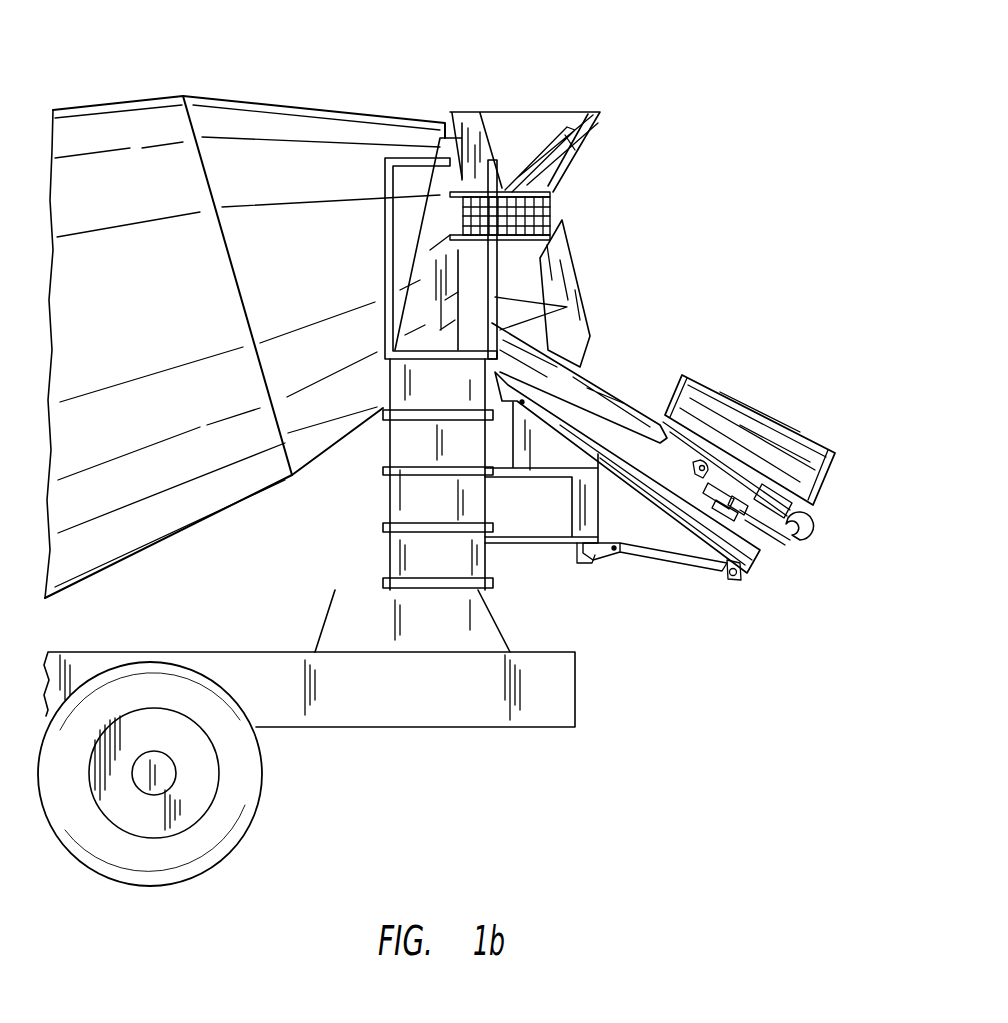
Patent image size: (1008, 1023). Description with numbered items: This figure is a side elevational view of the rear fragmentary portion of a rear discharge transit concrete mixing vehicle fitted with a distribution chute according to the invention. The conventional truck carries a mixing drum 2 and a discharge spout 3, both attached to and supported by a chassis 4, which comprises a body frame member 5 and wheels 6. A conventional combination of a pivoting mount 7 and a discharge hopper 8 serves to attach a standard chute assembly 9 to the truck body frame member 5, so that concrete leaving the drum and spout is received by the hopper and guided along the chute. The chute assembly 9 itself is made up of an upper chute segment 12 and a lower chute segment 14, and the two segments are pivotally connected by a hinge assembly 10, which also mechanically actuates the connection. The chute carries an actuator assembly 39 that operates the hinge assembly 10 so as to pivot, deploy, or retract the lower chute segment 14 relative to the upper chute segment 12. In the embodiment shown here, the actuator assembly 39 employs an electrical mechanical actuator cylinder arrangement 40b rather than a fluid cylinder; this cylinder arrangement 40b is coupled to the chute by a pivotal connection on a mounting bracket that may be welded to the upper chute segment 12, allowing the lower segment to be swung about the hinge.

The mixing drum 2 is at (258, 124).
The discharge spout 3 is at (518, 123).
The chassis 4 is at (333, 727).
The body frame member 5 is at (390, 708).
The wheels 6 is at (247, 796).
The pivoting mount 7 is at (580, 500).
The discharge hopper 8 is at (563, 305).
The chute assembly 9 is at (722, 385).
The hinge assembly 10 is at (817, 540).
The upper chute segment 12 is at (555, 400).
The lower chute segment 14 is at (782, 437).
The actuator assembly 39 is at (722, 510).
The electrical mechanical actuator cylinder arrangement 40b is at (723, 493).